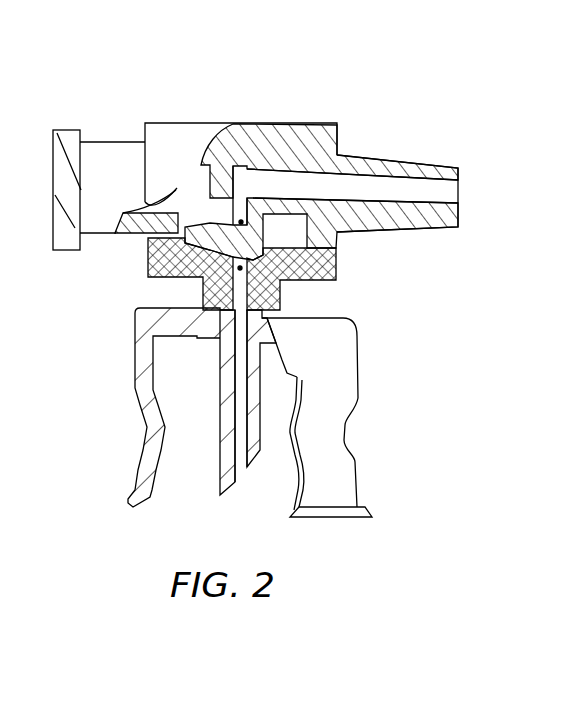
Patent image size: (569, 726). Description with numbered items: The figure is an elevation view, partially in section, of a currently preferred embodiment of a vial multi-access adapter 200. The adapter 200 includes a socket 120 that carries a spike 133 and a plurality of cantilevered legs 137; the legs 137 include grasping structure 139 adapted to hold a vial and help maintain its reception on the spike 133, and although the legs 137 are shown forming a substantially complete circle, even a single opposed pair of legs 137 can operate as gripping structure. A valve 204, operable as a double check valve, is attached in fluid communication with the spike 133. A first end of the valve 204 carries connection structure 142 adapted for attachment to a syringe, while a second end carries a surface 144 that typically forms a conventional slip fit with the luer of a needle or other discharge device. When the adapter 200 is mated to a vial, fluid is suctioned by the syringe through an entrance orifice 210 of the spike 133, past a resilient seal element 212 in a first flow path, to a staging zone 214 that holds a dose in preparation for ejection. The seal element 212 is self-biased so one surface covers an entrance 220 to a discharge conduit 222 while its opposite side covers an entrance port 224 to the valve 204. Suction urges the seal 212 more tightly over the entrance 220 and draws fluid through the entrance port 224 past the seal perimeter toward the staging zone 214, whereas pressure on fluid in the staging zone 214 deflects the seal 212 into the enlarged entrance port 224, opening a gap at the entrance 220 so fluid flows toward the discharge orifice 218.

The connection structure 142 is at (84, 104).
The vial multi-access adapter 200 is at (286, 92).
The valve 204 is at (327, 125).
The surface 144 is at (399, 159).
The discharge orifice 218 is at (451, 193).
The discharge conduit 222 is at (367, 190).
The resilient seal element 212 is at (352, 232).
The entrance 220 is at (248, 188).
The staging zone 214 is at (183, 197).
The entrance port 224 is at (173, 273).
The spike 133 is at (220, 455).
The entrance orifice 210 is at (241, 462).
The socket 120 is at (345, 347).
The grasping structure 139 is at (362, 425).
The cantilevered legs 137 is at (342, 493).